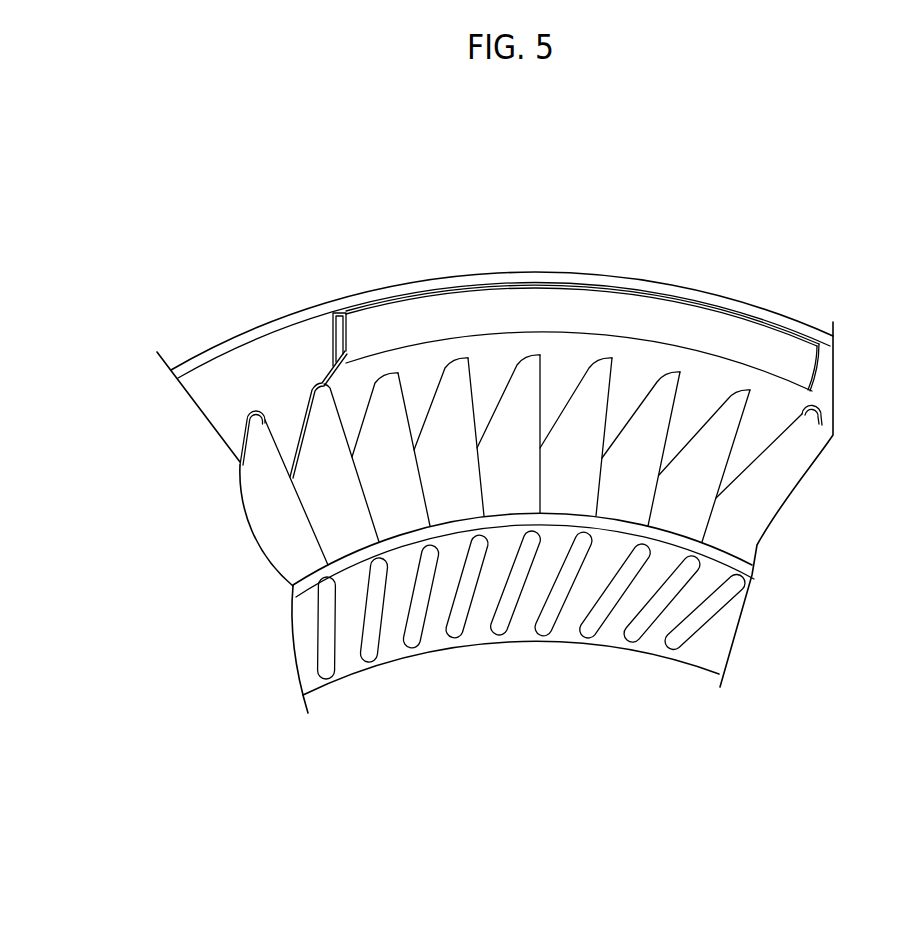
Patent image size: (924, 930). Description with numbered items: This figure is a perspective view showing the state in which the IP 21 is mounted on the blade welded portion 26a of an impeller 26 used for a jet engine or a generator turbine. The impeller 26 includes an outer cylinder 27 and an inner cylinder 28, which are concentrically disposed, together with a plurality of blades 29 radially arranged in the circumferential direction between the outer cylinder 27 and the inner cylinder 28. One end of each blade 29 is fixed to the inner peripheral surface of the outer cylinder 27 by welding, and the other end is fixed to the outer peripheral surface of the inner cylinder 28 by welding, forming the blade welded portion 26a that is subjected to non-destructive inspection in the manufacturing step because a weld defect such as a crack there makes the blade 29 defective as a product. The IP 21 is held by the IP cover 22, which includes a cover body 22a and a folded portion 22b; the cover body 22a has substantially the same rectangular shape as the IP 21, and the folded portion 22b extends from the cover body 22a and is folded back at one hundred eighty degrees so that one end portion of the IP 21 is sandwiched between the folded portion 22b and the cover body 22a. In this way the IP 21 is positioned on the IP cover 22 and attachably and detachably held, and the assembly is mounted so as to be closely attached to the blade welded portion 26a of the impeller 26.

The IP 21 is at (755, 432).
The IP cover 22 is at (542, 299).
The cover body 22a is at (333, 339).
The folded portion 22b is at (422, 327).
The impeller 26 is at (198, 348).
The blade welded portion 26a is at (303, 417).
The outer cylinder 27 is at (277, 327).
The inner cylinder 28 is at (563, 643).
The blades 29 is at (332, 507).